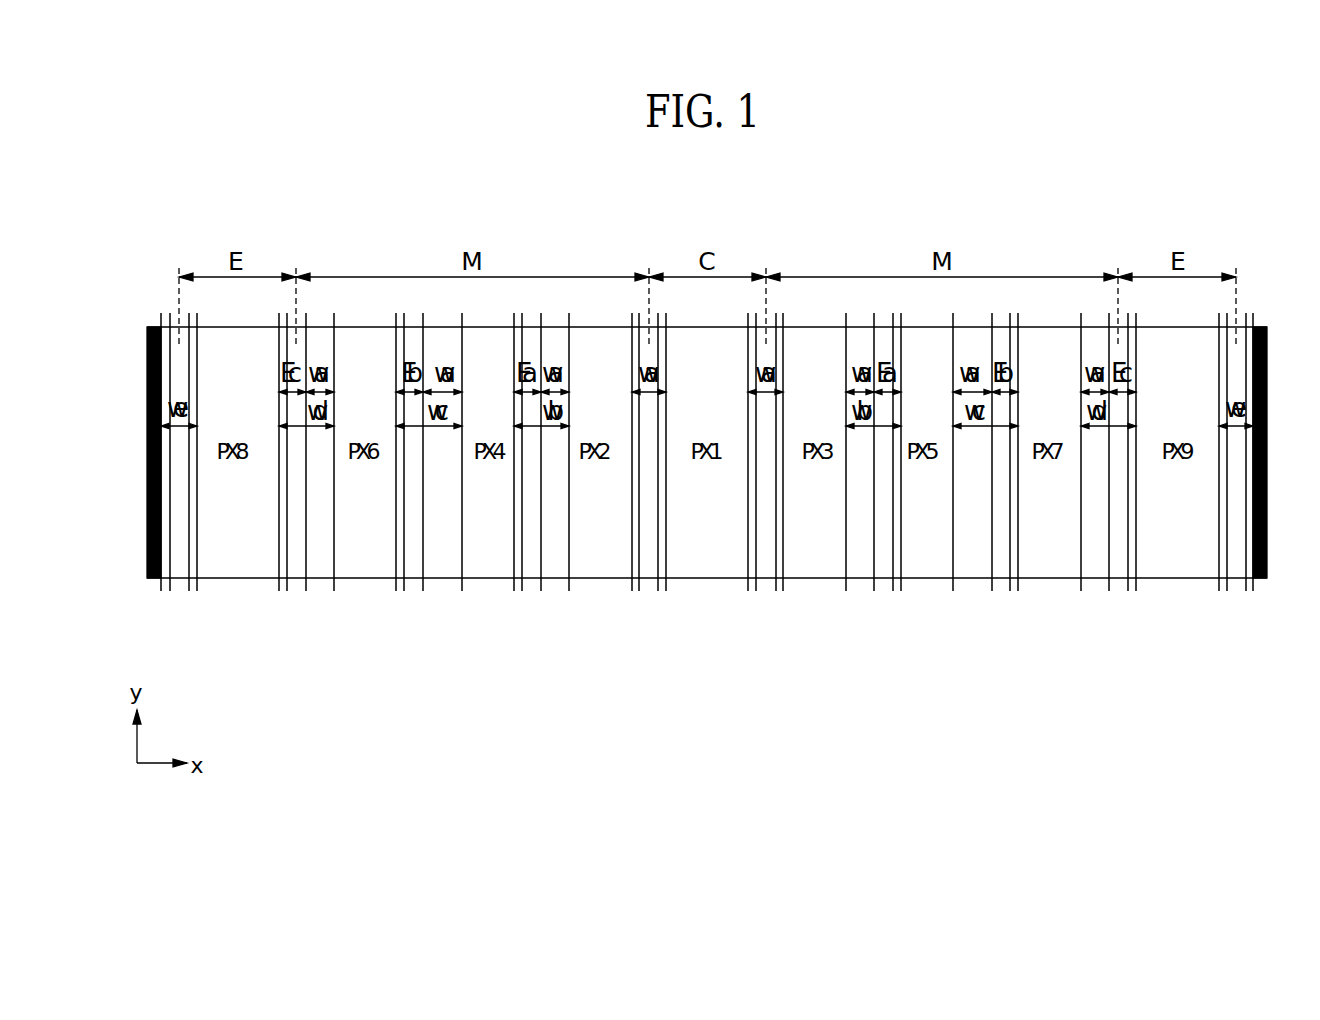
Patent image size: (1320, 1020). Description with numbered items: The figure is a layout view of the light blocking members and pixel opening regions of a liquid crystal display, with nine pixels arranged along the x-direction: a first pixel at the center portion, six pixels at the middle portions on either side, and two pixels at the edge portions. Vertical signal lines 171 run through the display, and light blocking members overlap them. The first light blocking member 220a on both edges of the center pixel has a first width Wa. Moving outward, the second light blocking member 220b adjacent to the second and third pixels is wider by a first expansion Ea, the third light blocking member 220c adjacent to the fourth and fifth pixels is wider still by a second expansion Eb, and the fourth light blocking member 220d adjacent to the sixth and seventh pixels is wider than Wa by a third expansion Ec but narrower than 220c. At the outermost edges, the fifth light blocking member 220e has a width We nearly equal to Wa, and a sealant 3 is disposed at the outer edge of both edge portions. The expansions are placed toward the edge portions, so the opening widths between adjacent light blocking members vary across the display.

The signal line 171 is at (1246, 591).
The first light blocking member 220a is at (783, 588).
The second light blocking member 220b is at (901, 588).
The third light blocking member 220c is at (1018, 588).
The fourth light blocking member 220d is at (1136, 588).
The fifth light blocking member 220e is at (1253, 588).
The sealant 3 is at (1266, 598).